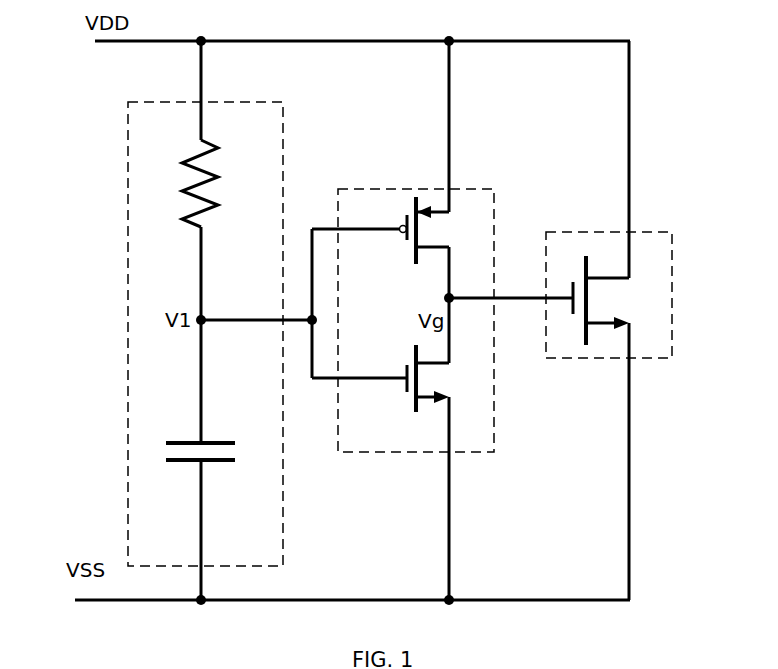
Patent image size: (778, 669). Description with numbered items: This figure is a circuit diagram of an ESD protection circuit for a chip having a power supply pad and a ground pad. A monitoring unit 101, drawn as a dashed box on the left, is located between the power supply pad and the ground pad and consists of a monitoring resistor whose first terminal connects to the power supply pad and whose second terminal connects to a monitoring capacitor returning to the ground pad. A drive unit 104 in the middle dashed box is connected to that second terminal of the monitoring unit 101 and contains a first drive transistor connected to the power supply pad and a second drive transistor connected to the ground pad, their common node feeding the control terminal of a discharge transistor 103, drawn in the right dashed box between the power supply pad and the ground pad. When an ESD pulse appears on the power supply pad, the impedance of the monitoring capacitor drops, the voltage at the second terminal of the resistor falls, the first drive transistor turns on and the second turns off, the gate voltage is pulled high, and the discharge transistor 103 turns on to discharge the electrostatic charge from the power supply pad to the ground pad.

The monitoring unit 101 is at (233, 72).
The discharge transistor 103 is at (568, 189).
The drive unit 104 is at (362, 146).